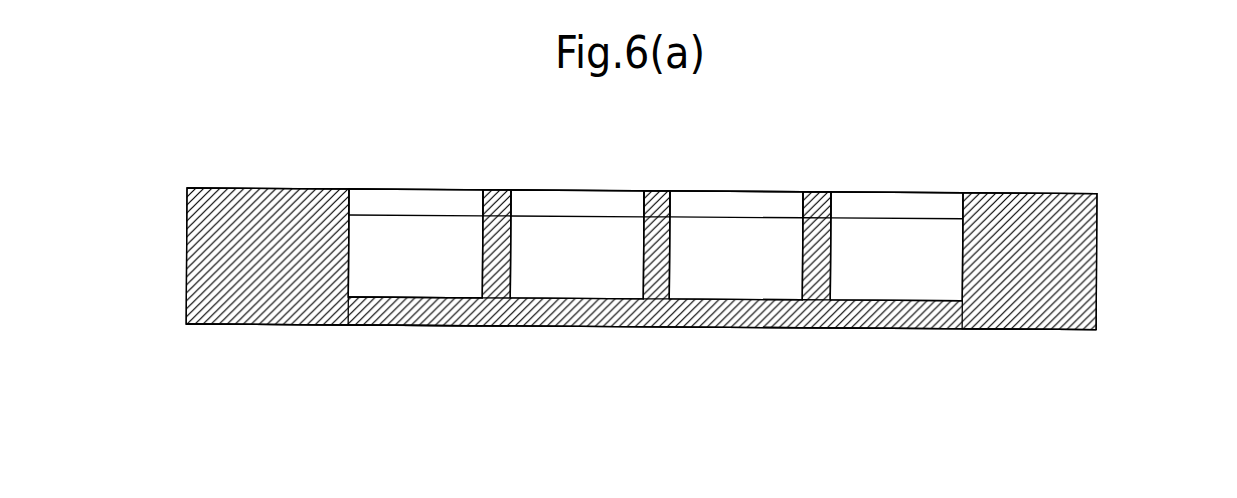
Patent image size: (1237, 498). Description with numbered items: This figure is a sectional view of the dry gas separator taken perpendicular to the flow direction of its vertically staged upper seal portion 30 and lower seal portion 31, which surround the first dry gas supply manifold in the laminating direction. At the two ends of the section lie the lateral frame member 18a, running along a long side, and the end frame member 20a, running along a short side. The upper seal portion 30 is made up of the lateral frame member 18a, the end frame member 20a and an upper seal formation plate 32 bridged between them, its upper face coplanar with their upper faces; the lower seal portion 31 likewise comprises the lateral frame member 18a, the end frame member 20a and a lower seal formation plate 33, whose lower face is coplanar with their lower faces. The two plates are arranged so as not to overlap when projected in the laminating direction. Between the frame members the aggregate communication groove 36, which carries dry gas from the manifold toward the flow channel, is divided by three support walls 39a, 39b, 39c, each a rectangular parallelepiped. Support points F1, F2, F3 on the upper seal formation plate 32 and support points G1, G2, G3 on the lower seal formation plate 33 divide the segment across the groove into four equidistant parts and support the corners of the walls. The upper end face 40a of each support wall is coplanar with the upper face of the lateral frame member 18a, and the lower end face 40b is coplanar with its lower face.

The upper seal portion 30 is at (1000, 193).
The lower seal portion 31 is at (963, 330).
The lateral frame member 18a is at (1073, 251).
The end frame member 20a is at (263, 218).
The upper seal formation plate 32 is at (421, 206).
The lower seal formation plate 33 is at (440, 312).
The aggregate communication groove 36 is at (892, 235).
The support wall 39a is at (822, 267).
The support wall 39b is at (657, 268).
The support wall 39c is at (497, 265).
The laminating-direction-wise upper end face 40a is at (790, 190).
The laminating-direction-wise lower end face 40b is at (829, 326).
The support point F1 is at (813, 200).
The support point F2 is at (657, 200).
The support point F3 is at (495, 200).
The support point G1 is at (815, 312).
The support point G2 is at (661, 312).
The support point G3 is at (493, 312).